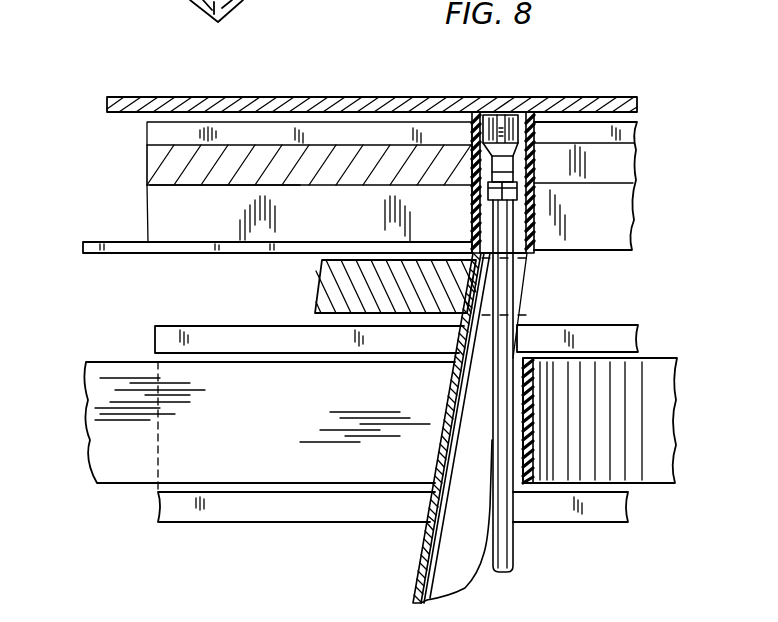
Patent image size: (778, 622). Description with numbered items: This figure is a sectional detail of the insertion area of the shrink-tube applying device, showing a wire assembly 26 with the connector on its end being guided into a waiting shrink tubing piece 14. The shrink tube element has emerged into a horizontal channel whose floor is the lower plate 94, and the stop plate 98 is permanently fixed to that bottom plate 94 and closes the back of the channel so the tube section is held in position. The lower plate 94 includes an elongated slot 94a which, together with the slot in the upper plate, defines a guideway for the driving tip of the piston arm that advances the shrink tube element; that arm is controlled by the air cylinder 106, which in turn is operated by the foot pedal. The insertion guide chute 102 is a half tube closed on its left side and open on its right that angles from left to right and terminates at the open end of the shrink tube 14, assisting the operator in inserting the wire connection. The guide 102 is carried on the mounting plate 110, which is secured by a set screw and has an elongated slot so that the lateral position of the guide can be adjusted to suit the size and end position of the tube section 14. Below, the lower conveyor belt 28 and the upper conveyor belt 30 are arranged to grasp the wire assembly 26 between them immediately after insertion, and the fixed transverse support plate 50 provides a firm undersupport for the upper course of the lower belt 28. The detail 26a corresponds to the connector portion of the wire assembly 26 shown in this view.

The stop plate 98 is at (312, 97).
The bolt head 26a is at (497, 112).
The air cylinder 106 is at (160, 157).
The elongated slot 94a is at (160, 188).
The lower plate 94 is at (170, 224).
The shrink tubing piece 14 is at (552, 178).
The mounting plate 110 is at (333, 291).
The lower conveyor belt 28 is at (117, 473).
The transverse support plate 50 is at (287, 512).
The insertion guide chute 102 is at (430, 523).
The wire assembly 26 is at (514, 552).
The upper conveyor belt 30 is at (658, 473).